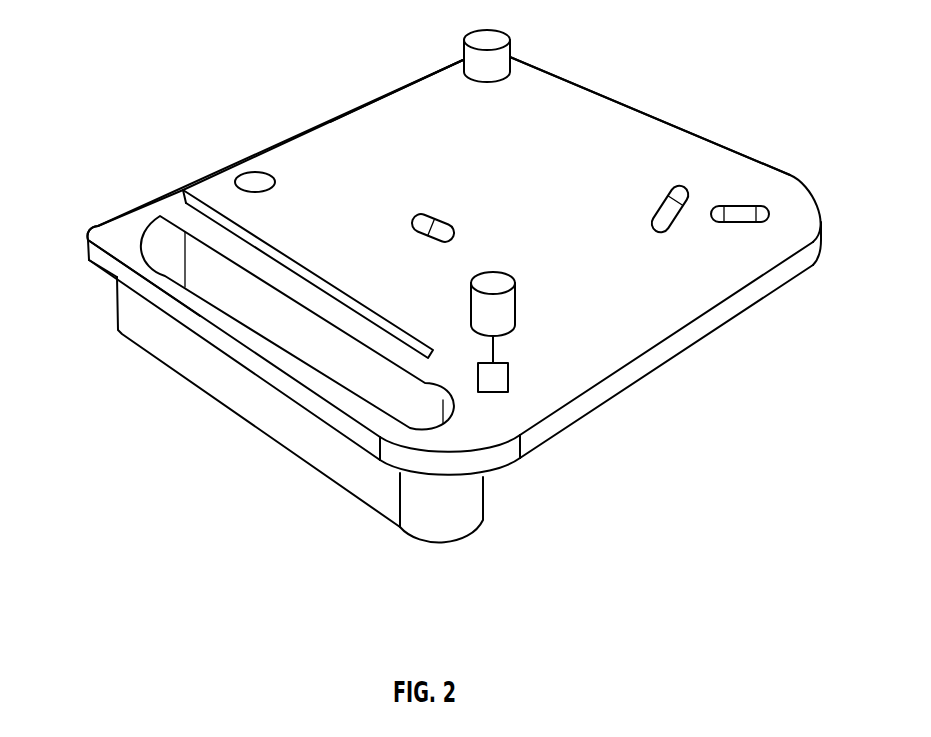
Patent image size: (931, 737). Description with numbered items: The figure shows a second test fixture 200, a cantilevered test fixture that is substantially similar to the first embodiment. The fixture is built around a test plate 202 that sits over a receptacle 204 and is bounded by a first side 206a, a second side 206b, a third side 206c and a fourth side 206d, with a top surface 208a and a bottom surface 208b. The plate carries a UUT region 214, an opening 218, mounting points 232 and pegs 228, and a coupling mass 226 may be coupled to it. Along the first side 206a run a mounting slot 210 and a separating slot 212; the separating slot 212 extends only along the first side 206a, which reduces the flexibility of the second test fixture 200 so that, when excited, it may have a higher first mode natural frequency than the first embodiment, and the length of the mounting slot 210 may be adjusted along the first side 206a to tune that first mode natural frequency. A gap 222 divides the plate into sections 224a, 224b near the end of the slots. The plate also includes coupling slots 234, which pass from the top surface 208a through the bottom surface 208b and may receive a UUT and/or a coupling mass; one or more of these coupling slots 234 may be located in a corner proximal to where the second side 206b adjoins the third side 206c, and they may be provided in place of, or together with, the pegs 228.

The second test fixture 200 is at (148, 48).
The test plate 202 is at (708, 66).
The receptacle 204 is at (137, 323).
The first side 206a is at (252, 360).
The second side 206b is at (690, 345).
The third side 206c is at (660, 118).
The fourth side 206d is at (322, 84).
The top surface 208a is at (613, 373).
The bottom surface 208b is at (590, 420).
The mounting slot 210 is at (150, 246).
The separating slot 212 is at (333, 284).
The UUT region 214 is at (503, 143).
The opening 218 is at (443, 216).
The gap 222 is at (170, 190).
The first section 224a is at (412, 80).
The second section 224b is at (105, 222).
The coupling mass 226 is at (508, 372).
The pegs 228 is at (493, 38).
The mounting points 232 is at (256, 170).
The coupling slots 234 is at (652, 207).